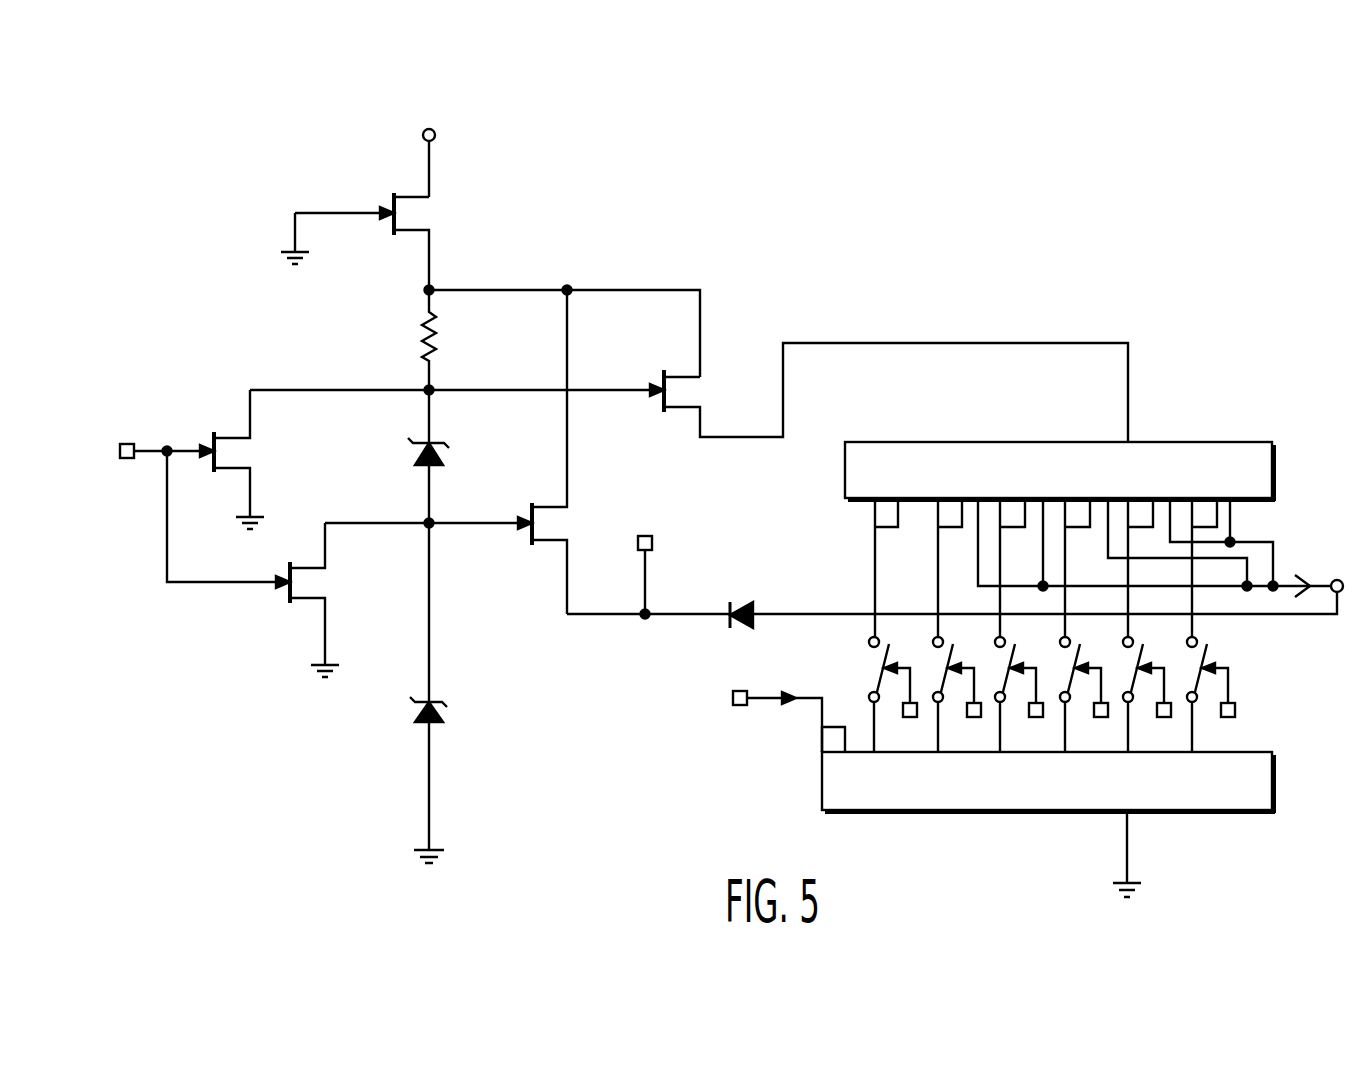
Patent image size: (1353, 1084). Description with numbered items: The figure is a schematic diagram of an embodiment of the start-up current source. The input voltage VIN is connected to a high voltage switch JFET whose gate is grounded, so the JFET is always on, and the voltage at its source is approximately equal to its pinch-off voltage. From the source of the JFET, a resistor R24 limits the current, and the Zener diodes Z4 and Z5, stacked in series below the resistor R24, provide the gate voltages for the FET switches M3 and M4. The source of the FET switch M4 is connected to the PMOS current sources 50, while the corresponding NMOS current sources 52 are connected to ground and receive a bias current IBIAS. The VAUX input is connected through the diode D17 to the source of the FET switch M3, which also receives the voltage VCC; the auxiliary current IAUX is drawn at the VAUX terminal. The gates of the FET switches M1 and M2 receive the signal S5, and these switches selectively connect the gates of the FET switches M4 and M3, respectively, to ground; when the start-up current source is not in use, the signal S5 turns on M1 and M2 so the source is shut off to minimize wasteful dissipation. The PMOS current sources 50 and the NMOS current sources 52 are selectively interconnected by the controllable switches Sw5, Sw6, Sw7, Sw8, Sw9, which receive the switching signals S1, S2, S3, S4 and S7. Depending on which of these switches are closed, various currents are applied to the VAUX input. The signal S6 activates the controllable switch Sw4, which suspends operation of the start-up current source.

The input voltage VIN is at (434, 149).
The high voltage switch JFET is at (405, 215).
The resistor R24 is at (436, 328).
The FET switch M4 is at (672, 392).
The Zener diode Z4 is at (446, 452).
The FET switch M3 is at (540, 525).
The Zener diode Z5 is at (446, 710).
The signal S5 is at (127, 443).
The FET switch M1 is at (222, 451).
The FET switch M2 is at (298, 583).
The voltage Vcc VCC is at (645, 535).
The diode D17 is at (748, 598).
The PMOS current sources 50 is at (890, 445).
The NMOS current sources 52 is at (858, 800).
The VAUX input VAUX is at (1335, 578).
The auxiliary current IAUX is at (1312, 593).
The bias current IBIAS is at (732, 697).
The controllable switch Sw4 is at (883, 665).
The controllable switch Sw5 is at (947, 665).
The controllable switch Sw6 is at (1009, 665).
The controllable switch Sw7 is at (1074, 665).
The controllable switch Sw8 is at (1137, 665).
The controllable switch Sw9 is at (1201, 665).
The switching signal S1 is at (972, 727).
The switching signal S2 is at (1035, 727).
The switching signal S3 is at (1099, 727).
The switching signal S4 is at (1162, 727).
The signal S6 is at (908, 727).
The switching signal S7 is at (1226, 727).